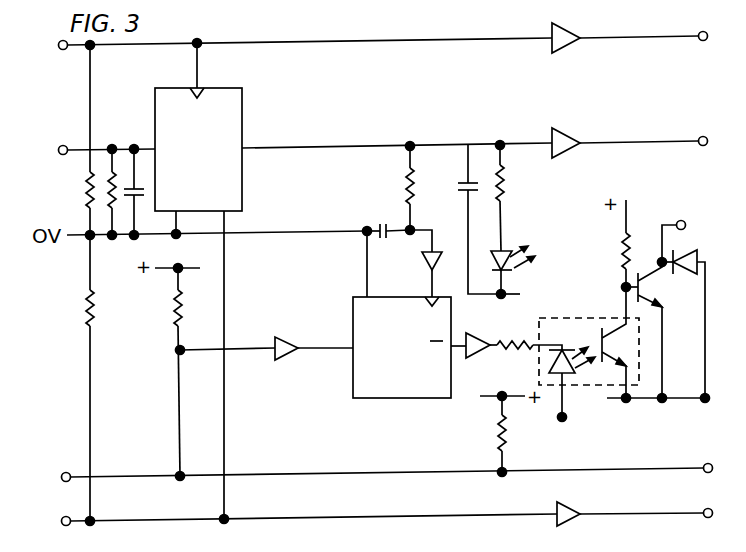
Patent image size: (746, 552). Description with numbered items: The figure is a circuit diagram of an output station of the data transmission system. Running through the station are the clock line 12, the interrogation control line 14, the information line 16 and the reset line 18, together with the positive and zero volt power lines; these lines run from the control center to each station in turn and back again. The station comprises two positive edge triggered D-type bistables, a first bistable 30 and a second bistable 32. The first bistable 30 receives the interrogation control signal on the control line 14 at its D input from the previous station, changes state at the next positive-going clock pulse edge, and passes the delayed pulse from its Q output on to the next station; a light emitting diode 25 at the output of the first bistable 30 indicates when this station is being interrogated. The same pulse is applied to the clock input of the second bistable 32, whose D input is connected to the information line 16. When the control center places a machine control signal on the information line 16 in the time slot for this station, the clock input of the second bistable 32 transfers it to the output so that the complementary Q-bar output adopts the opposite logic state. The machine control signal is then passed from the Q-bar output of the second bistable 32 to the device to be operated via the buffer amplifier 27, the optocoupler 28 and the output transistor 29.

The clock line 12 is at (367, 41).
The interrogation control line 14 is at (367, 146).
The information line 16 is at (372, 478).
The reset line 18 is at (372, 518).
The first bistable 30 is at (208, 151).
The second bistable 32 is at (407, 355).
The light emitting diode 25 is at (518, 281).
The buffer amplifier 27 is at (484, 317).
The optocoupler 28 is at (580, 388).
The output transistor 29 is at (646, 281).